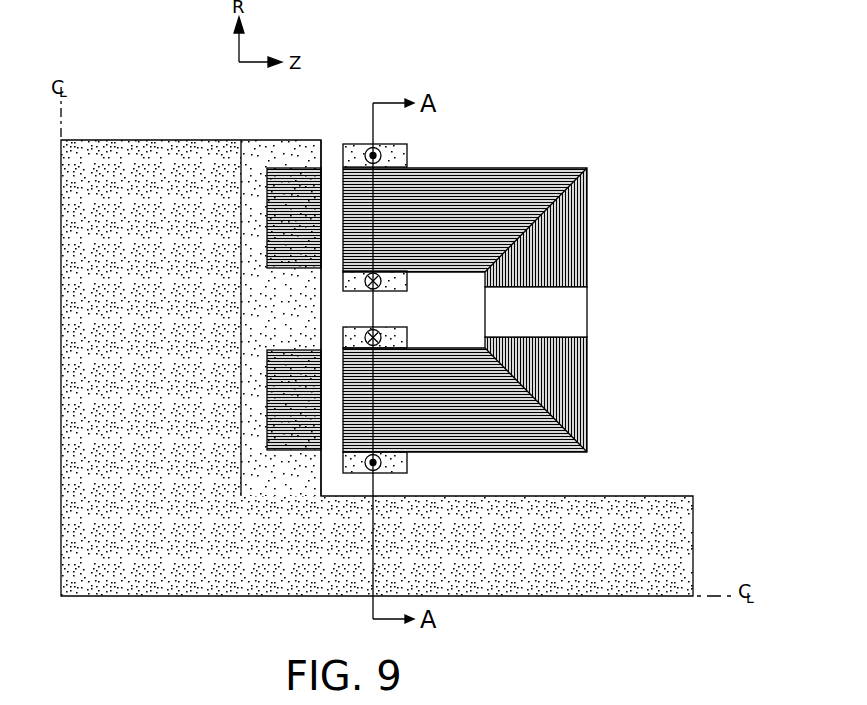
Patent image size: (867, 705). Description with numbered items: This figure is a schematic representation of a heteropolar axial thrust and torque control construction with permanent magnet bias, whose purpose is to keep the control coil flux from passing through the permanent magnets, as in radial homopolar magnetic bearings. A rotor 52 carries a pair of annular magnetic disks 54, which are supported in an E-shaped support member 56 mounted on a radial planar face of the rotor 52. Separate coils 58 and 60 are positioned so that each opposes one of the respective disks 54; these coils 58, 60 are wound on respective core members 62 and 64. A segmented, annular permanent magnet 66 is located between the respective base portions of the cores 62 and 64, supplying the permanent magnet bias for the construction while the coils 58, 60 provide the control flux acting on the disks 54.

The rotor 52 is at (148, 172).
The annular magnetic disks 54 is at (287, 205).
The E-shaped support member 56 is at (262, 312).
The coil 58 is at (388, 152).
The coil 60 is at (385, 462).
The core member 62 is at (470, 200).
The core member 64 is at (537, 405).
The segmented annular permanent magnet 66 is at (543, 297).